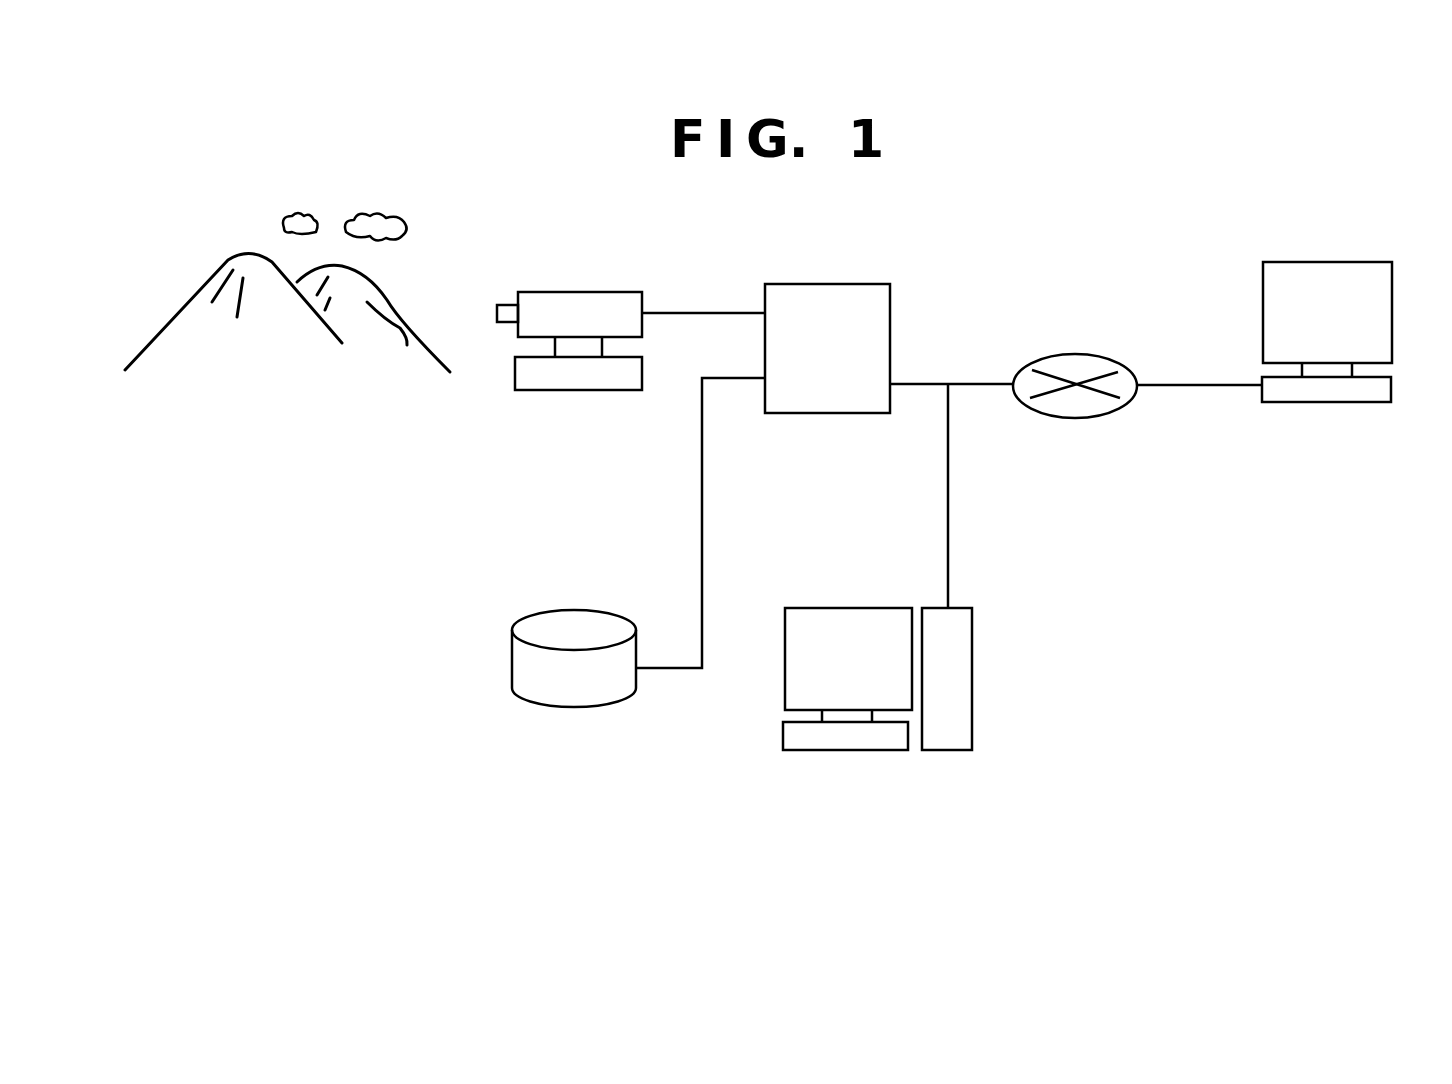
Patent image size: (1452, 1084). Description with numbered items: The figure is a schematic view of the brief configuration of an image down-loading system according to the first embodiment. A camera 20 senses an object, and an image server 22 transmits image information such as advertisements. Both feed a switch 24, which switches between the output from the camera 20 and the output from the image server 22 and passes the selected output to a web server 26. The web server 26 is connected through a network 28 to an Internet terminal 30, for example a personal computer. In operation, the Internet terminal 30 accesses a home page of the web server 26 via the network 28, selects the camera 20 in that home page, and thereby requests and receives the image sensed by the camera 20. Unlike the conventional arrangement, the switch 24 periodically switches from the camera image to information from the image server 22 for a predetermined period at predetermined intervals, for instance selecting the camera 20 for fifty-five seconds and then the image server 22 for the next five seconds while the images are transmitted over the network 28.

The camera 20 is at (583, 290).
The image server 22 is at (570, 610).
The switch 24 is at (822, 282).
The web server 26 is at (912, 595).
The network 28 is at (1072, 353).
The Internet terminal 30 is at (1332, 260).